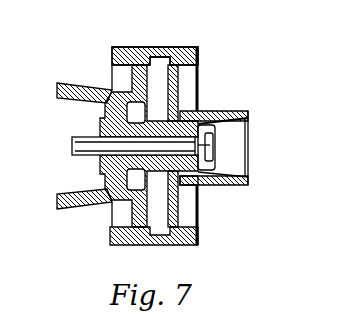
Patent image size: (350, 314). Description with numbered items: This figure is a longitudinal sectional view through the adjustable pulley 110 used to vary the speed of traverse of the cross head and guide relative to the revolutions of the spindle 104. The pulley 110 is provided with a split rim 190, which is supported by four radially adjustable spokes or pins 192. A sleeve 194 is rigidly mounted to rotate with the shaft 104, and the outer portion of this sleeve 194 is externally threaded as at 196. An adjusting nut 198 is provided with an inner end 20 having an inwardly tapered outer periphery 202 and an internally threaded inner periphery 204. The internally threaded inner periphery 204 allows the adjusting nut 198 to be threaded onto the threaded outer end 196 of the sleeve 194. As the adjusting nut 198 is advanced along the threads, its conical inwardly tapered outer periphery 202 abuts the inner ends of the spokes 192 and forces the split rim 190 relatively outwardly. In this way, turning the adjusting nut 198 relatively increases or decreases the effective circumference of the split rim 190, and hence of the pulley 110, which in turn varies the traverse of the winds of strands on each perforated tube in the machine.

The inner end 20 is at (152, 177).
The spindle 104 is at (92, 151).
The pulley 110 is at (150, 46).
The split rim 190 is at (200, 60).
The spokes 192 is at (180, 90).
The sleeve 194 is at (107, 122).
The externally threaded outer portion 196 is at (202, 110).
The adjusting nut 198 is at (250, 111).
The inwardly tapered outer periphery 202 is at (186, 182).
The internally threaded inner periphery 204 is at (123, 92).